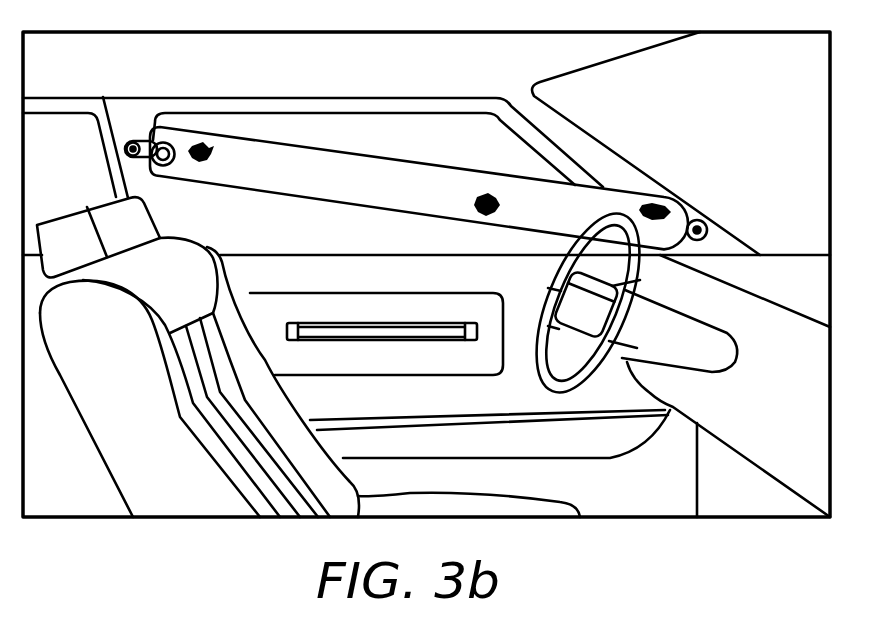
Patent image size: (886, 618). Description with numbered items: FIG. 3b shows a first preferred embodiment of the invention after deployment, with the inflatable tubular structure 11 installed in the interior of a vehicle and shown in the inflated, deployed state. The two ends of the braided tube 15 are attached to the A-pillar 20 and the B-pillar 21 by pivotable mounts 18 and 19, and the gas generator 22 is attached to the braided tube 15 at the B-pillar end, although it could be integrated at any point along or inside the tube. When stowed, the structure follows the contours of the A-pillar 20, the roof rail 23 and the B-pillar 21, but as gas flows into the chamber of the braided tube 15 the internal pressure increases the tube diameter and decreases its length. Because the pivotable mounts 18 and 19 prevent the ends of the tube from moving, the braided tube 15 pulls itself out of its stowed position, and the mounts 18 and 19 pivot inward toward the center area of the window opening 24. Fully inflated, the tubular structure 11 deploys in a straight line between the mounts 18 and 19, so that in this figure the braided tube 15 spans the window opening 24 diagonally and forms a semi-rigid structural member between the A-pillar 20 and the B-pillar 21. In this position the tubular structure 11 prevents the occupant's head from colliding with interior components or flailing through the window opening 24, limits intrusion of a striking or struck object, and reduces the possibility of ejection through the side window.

The inflatable tubular structure 11 is at (443, 167).
The braided tube 15 is at (300, 163).
The pivotable mount 18 is at (708, 226).
The pivotable mount 19 is at (124, 140).
The A-pillar 20 is at (603, 160).
The B-pillar 21 is at (134, 174).
The gas generator 22 is at (158, 140).
The roof rail 23 is at (217, 77).
The window opening 24 is at (377, 133).